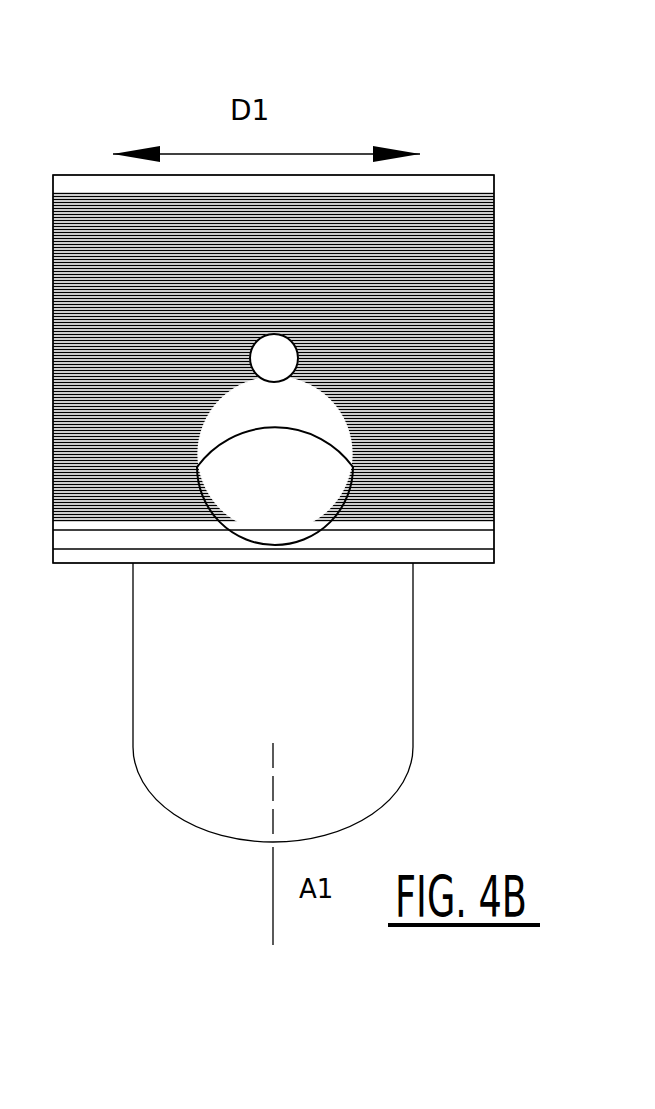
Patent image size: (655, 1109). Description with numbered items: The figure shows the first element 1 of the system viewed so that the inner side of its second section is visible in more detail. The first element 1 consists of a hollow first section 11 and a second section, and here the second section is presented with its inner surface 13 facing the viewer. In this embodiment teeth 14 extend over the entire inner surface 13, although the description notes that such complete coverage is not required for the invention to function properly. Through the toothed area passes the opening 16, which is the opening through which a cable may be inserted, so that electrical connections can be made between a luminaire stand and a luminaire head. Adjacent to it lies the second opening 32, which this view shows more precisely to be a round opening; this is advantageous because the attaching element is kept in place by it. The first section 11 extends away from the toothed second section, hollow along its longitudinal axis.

The first element 1 is at (483, 108).
The inner surface 13 is at (472, 185).
The teeth 14 is at (475, 367).
The opening 16 is at (240, 512).
The second opening 32 is at (273, 352).
The first section 11 is at (395, 650).